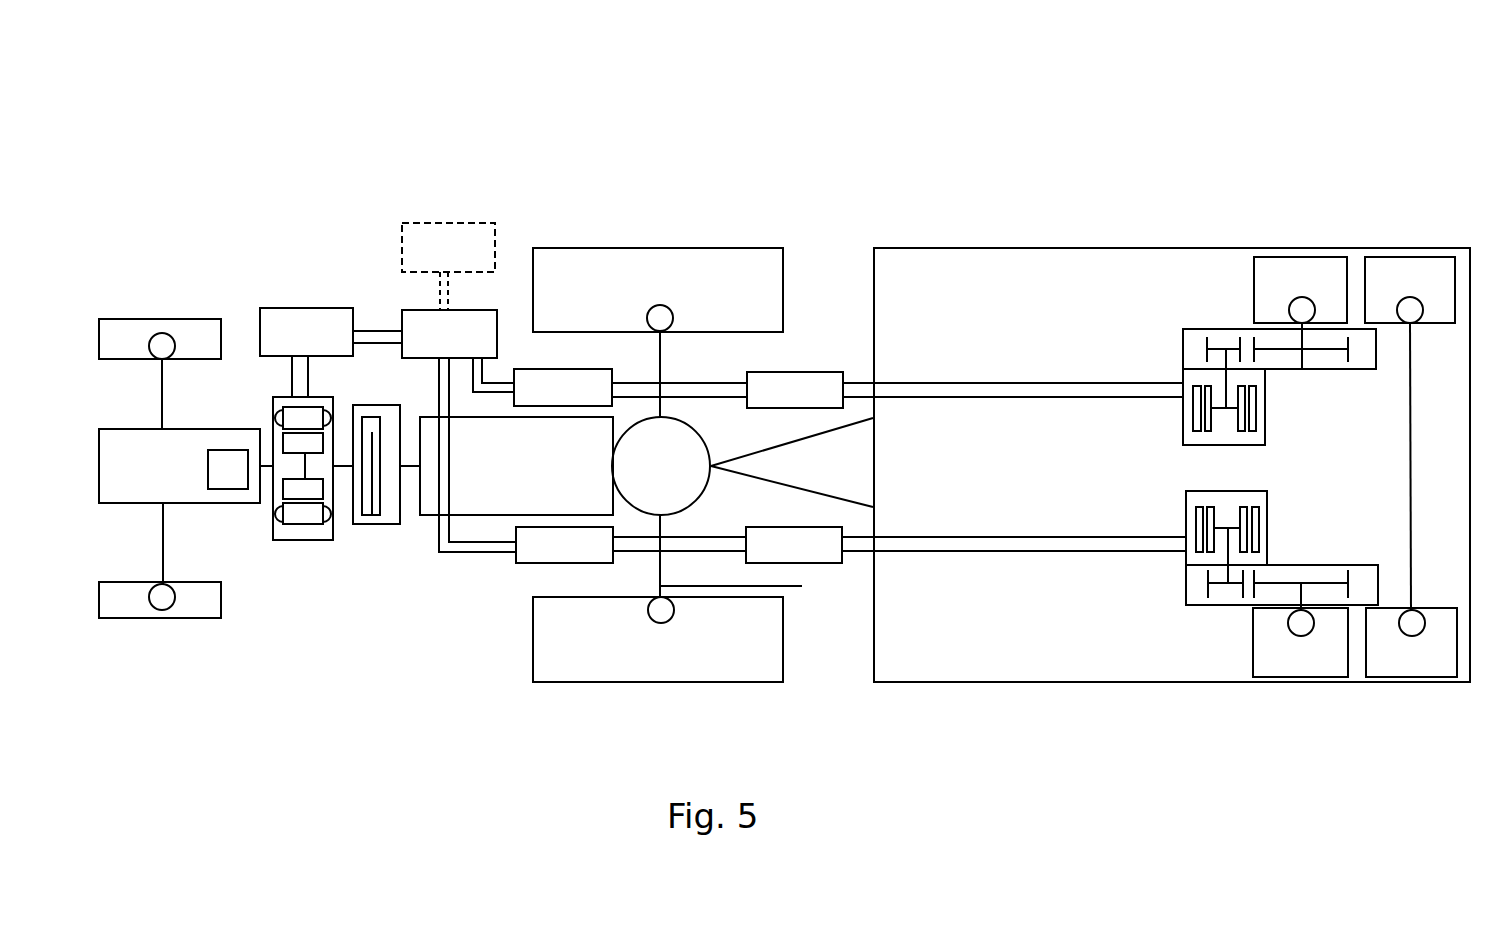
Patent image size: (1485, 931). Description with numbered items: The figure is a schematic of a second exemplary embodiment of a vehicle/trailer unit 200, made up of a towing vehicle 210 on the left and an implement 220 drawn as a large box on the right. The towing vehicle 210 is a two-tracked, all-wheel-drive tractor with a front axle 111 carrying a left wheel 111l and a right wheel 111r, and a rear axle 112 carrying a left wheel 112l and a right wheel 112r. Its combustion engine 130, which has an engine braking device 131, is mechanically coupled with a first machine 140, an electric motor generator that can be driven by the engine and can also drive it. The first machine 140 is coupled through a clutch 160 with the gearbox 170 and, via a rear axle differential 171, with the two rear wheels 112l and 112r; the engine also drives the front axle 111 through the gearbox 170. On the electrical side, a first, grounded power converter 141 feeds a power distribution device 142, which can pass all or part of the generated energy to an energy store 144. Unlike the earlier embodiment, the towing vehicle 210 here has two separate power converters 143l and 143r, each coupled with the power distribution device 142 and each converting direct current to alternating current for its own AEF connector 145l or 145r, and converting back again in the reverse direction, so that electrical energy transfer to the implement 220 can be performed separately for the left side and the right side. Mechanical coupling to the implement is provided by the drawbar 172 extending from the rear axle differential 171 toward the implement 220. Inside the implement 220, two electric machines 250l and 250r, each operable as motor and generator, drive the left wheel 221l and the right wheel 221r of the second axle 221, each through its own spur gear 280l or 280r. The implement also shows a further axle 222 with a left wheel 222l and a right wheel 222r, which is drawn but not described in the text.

The vehicle/trailer unit 200 is at (796, 128).
The towing vehicle 210 is at (413, 728).
The implement 220 is at (952, 656).
The front axle 111 is at (155, 270).
The right wheel of the front axle 111r is at (194, 334).
The left wheel of the front axle 111l is at (187, 600).
The rear axle 112 is at (628, 214).
The right wheel of the rear axle 112r is at (745, 299).
The left wheel of the rear axle 112l is at (748, 658).
The combustion engine 130 is at (173, 481).
The engine braking device 131 is at (232, 478).
The first machine 140 is at (303, 511).
The first, grounded power converter 141 is at (322, 351).
The power distribution device 142 is at (467, 351).
The right-side power converter 143r is at (598, 404).
The left-side power converter 143l is at (593, 561).
The energy store 144 is at (467, 269).
The right AEF connector 145r is at (823, 409).
The left AEF connector 145l is at (820, 561).
The clutch 160 is at (372, 510).
The gearbox 170 is at (539, 483).
The rear axle differential 171 is at (685, 483).
The drawbar 172 is at (840, 483).
The second axle of the implement 221 is at (1287, 220).
The right wheel of the second axle 221r is at (1329, 291).
The left wheel of the second axle 221l is at (1329, 673).
The second rear axle with wheels 222 is at (1403, 220).
The right wheel of second rear axle 222r is at (1435, 291).
The left wheel of second rear axle 222l is at (1433, 673).
The right electric machine 250r is at (1255, 410).
The left electric machine 250l is at (1259, 532).
The right spur gear 280r is at (1192, 336).
The left spur gear 280l is at (1197, 583).